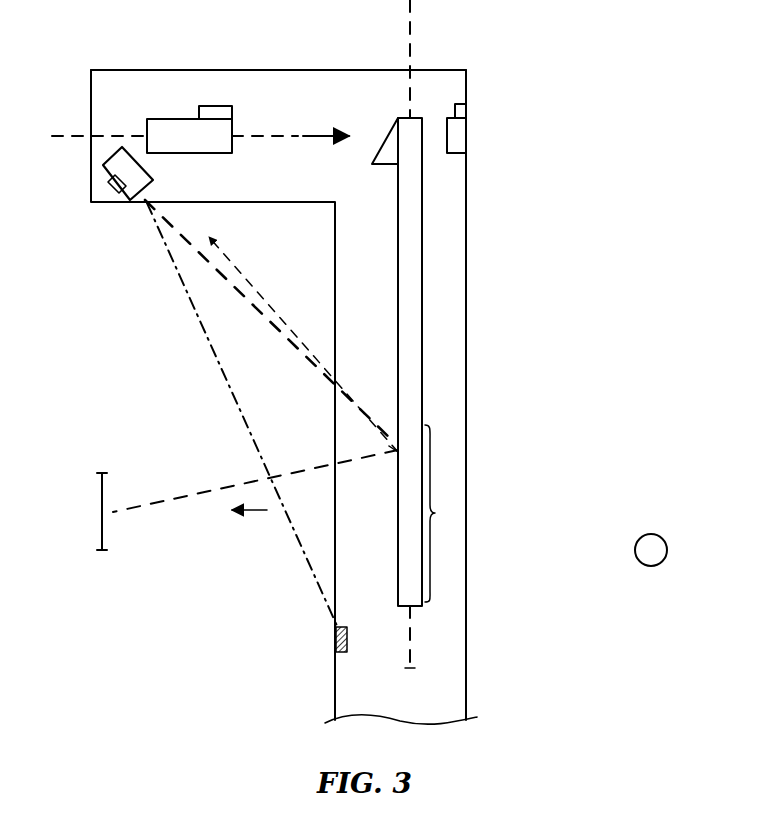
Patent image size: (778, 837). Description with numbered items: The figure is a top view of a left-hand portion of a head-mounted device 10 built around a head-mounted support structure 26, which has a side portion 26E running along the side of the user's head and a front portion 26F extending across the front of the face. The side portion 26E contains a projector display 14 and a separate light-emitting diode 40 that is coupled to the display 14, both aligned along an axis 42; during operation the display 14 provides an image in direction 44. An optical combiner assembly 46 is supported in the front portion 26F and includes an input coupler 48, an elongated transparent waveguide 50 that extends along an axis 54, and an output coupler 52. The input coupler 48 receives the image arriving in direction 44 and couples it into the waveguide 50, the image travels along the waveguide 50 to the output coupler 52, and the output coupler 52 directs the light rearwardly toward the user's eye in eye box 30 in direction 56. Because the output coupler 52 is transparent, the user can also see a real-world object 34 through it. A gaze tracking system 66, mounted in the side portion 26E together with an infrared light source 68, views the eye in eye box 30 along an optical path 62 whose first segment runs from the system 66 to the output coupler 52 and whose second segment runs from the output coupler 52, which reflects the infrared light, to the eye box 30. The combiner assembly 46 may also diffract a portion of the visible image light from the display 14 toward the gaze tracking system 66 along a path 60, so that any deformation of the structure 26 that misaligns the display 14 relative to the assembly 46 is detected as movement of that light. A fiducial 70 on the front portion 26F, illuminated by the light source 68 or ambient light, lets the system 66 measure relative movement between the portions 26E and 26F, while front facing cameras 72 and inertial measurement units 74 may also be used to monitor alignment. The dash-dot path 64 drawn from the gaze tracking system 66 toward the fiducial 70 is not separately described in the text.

The head-mounted device 10 is at (543, 482).
The display 14 is at (195, 153).
The head-mounted support structure 26 is at (455, 692).
The side portion 26E is at (255, 78).
The front portion 26F is at (455, 407).
The eye box 30 is at (100, 553).
The object 34 is at (652, 566).
The light-emitting diode 40 is at (207, 106).
The axis 42 is at (57, 136).
The direction 44 is at (322, 137).
The optical combiner assembly 46 is at (450, 260).
The input coupler 48 is at (378, 165).
The waveguide 50 is at (406, 187).
The output coupler 52 is at (445, 513).
The axis 54 is at (410, 34).
The direction 56 is at (250, 515).
The path 60 is at (232, 260).
The optical path 62 is at (243, 297).
The reference beam 64 is at (190, 300).
The gaze tracking system 66 is at (103, 164).
The light source 68 is at (125, 200).
The fiducial 70 is at (335, 643).
The cameras 72 is at (460, 135).
The inertial measurement units 74 is at (460, 112).